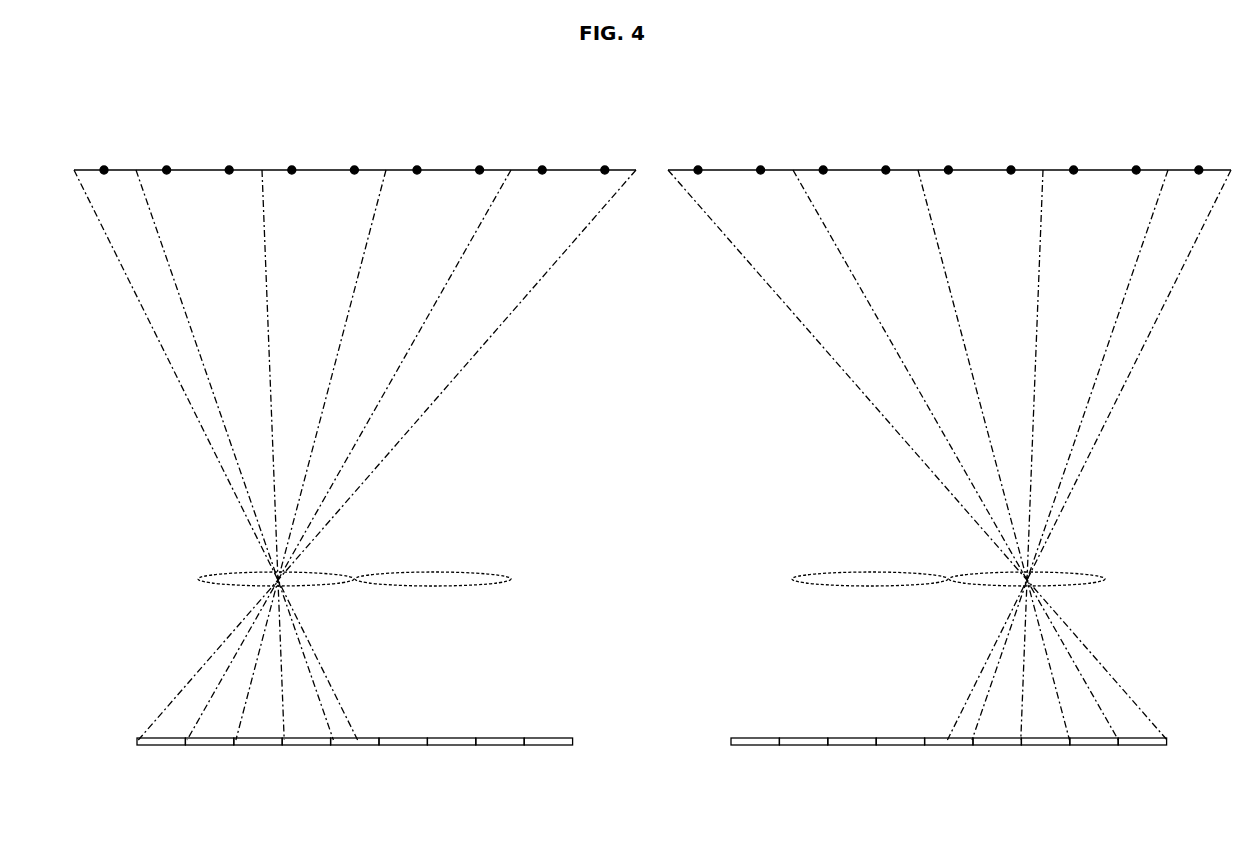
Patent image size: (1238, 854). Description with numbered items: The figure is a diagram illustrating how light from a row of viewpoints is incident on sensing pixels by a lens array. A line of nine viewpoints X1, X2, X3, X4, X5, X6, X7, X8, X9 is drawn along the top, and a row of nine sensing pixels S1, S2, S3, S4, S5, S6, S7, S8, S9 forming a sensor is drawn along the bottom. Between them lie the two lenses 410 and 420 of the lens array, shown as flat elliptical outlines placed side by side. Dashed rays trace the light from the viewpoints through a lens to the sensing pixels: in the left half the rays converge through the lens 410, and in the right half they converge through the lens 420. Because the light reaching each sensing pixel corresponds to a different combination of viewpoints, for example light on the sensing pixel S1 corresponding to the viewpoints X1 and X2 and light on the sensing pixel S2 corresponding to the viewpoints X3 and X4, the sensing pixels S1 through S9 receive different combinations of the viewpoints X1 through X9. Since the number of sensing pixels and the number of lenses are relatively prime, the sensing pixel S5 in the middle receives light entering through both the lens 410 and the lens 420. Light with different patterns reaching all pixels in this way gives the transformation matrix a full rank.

The lens 410 is at (231, 572).
The lens 420 is at (437, 572).
The viewpoint X1 is at (898, 156).
The viewpoint X2 is at (836, 156).
The viewpoint X3 is at (773, 156).
The viewpoint X4 is at (710, 156).
The viewpoint X5 is at (648, 156).
The viewpoint X6 is at (585, 156).
The viewpoint X7 is at (523, 156).
The viewpoint X8 is at (460, 156).
The viewpoint X9 is at (397, 156).
The sensing pixel S1 is at (458, 760).
The sensing pixel S2 is at (506, 760).
The sensing pixel S3 is at (555, 760).
The sensing pixel S4 is at (603, 760).
The sensing pixel S5 is at (652, 760).
The sensing pixel S6 is at (700, 760).
The sensing pixel S7 is at (748, 760).
The sensing pixel S8 is at (797, 760).
The sensing pixel S9 is at (845, 760).